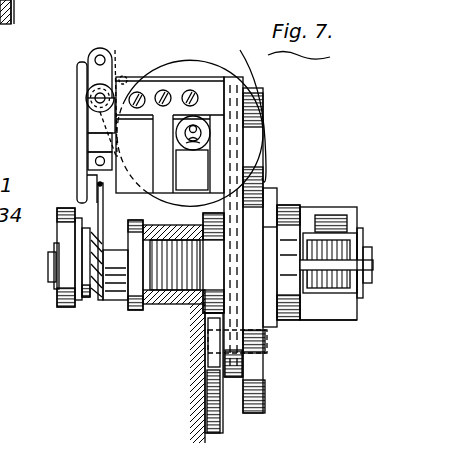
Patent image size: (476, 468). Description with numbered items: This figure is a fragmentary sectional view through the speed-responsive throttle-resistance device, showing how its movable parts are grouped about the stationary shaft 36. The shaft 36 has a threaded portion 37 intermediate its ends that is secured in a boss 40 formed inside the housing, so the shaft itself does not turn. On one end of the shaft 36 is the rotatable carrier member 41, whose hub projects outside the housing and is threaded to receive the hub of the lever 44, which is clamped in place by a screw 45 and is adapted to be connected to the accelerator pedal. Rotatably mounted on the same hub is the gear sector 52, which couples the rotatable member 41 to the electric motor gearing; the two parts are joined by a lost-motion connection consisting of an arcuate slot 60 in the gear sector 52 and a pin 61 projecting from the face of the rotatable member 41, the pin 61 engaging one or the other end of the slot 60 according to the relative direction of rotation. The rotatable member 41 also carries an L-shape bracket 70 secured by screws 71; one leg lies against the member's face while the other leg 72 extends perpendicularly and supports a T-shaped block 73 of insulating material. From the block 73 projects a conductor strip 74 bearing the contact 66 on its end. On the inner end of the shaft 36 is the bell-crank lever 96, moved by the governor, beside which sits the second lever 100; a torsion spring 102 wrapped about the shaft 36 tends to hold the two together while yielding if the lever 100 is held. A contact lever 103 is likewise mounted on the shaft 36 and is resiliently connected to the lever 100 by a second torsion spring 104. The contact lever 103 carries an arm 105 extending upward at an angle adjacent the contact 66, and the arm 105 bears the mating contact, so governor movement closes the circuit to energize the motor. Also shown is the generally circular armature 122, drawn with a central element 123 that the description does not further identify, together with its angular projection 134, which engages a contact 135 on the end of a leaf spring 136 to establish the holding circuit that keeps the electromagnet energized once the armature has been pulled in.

The angular projection 134 is at (133, 79).
The contact 135 is at (118, 75).
The arm 105 is at (79, 73).
The conductor strip 74 is at (86, 95).
The contact 66 is at (86, 105).
The leaf spring 136 is at (90, 148).
The T-shaped block 73 is at (175, 85).
The L-shape bracket 70 is at (212, 83).
The screws 71 is at (258, 92).
The pin 123 is at (197, 131).
The armature 122 is at (246, 128).
The rotatable carrier member 41 is at (195, 172).
The leg 72 is at (263, 148).
The screw 45 is at (330, 222).
The stationary shaft 36 is at (48, 272).
The lever 44 is at (330, 320).
The bell-crank lever 96 is at (63, 313).
The second lever 100 is at (80, 317).
The torsion spring 102 is at (85, 312).
The second torsion spring 104 is at (100, 300).
The contact lever 103 is at (115, 298).
The threaded portion 37 is at (172, 303).
The boss 40 is at (183, 292).
The arcuate slot 60 is at (266, 343).
The pin 61 is at (245, 360).
The gear sector 52 is at (265, 395).